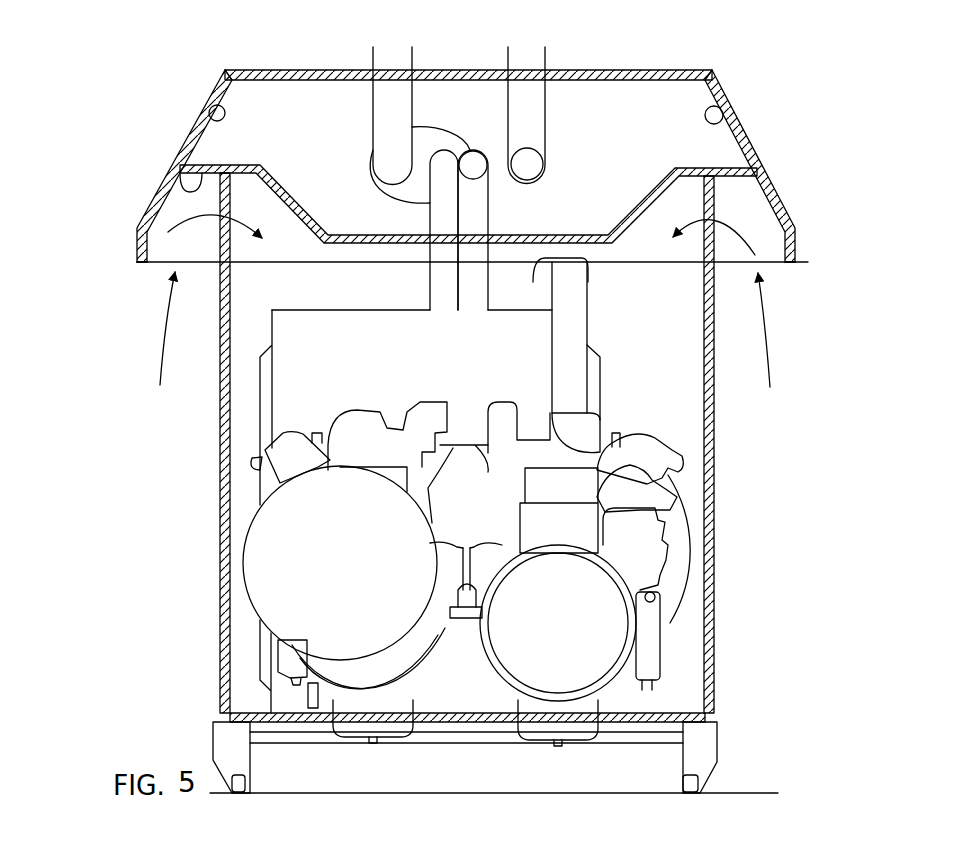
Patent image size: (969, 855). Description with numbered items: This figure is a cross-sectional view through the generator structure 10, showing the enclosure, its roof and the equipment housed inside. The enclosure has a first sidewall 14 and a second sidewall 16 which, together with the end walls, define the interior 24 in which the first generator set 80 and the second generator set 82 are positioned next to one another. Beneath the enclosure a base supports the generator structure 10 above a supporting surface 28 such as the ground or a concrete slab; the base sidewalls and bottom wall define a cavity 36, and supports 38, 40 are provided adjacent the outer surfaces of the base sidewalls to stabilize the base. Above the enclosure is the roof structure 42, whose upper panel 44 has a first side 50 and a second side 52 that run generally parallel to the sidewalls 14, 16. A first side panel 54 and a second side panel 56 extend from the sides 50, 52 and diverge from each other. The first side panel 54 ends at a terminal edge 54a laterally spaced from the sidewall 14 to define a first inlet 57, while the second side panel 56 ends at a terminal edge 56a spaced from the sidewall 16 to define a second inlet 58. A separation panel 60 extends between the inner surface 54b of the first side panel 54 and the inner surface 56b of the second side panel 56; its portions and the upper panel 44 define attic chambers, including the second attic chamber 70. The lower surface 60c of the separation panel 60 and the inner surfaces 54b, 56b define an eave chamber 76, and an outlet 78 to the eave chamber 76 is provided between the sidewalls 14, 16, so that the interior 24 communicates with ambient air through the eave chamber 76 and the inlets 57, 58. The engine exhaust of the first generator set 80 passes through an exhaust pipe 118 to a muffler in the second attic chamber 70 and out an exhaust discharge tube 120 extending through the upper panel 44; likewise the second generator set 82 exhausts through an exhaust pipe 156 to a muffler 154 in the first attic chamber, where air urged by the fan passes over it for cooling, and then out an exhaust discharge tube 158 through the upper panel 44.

The generator structure 10 is at (768, 853).
The first sidewall 14 is at (218, 465).
The second sidewall 16 is at (712, 455).
The interior 24 is at (478, 797).
The supporting surface 28 is at (778, 793).
The cavity 36 is at (412, 788).
The support 38 is at (218, 775).
The support 40 is at (712, 770).
The roof structure 42 is at (668, 72).
The upper panel 44 is at (295, 72).
The first side 50 is at (225, 70).
The second side 52 is at (712, 72).
The first side panel 54 is at (180, 152).
The terminal edge 54a is at (135, 255).
The inner surface 54b is at (212, 106).
The second side panel 56 is at (750, 143).
The terminal edge 56a is at (795, 265).
The inner surface 56b is at (728, 103).
The first inlet 57 is at (152, 263).
The second inlet 58 is at (773, 265).
The separation panel 60 is at (657, 208).
The lower surface 60c is at (170, 190).
The second attic chamber 70 is at (664, 151).
The eave chamber 76 is at (220, 291).
The outlet 78 is at (686, 283).
The first generator set 80 is at (672, 624).
The second generator set 82 is at (248, 600).
The exhaust pipe 118 is at (488, 210).
The exhaust discharge tube 120 is at (540, 108).
The muffler 154 is at (365, 165).
The exhaust pipe 156 is at (430, 213).
The exhaust discharge tube 158 is at (380, 115).